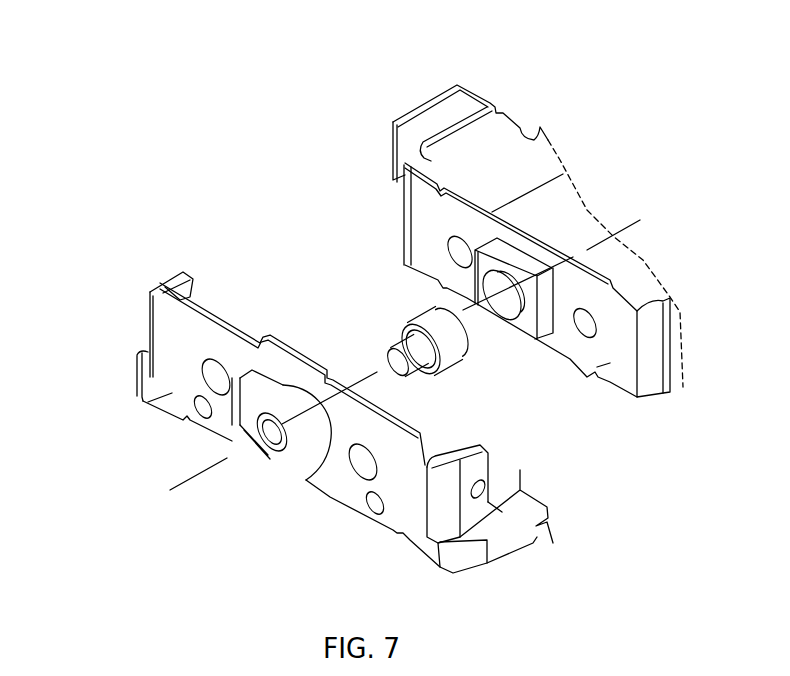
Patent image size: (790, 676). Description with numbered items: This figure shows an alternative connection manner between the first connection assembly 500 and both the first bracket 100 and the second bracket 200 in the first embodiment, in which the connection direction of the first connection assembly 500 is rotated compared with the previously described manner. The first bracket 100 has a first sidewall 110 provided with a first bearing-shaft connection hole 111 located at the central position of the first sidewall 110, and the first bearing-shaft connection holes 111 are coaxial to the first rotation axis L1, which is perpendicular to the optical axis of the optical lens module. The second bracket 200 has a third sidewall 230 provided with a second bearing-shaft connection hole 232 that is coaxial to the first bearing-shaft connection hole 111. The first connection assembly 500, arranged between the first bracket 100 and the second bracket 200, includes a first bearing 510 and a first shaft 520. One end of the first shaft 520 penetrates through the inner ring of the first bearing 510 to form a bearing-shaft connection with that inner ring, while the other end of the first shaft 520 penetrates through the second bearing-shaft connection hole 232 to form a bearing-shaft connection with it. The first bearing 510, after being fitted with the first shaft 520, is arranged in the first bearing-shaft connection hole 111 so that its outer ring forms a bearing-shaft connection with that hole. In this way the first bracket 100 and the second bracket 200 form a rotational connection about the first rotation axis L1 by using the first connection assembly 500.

The first bracket 100 is at (418, 90).
The first sidewall 110 is at (612, 368).
The first bearing-shaft connection hole 111 is at (498, 302).
The second bracket 200 is at (155, 283).
The third sidewall 230 is at (143, 400).
The second bearing-shaft connection hole 232 is at (257, 463).
The first connection assembly 500 is at (355, 233).
The first bearing 510 is at (415, 313).
The first shaft 520 is at (390, 342).
The first rotation axis L1 is at (193, 482).